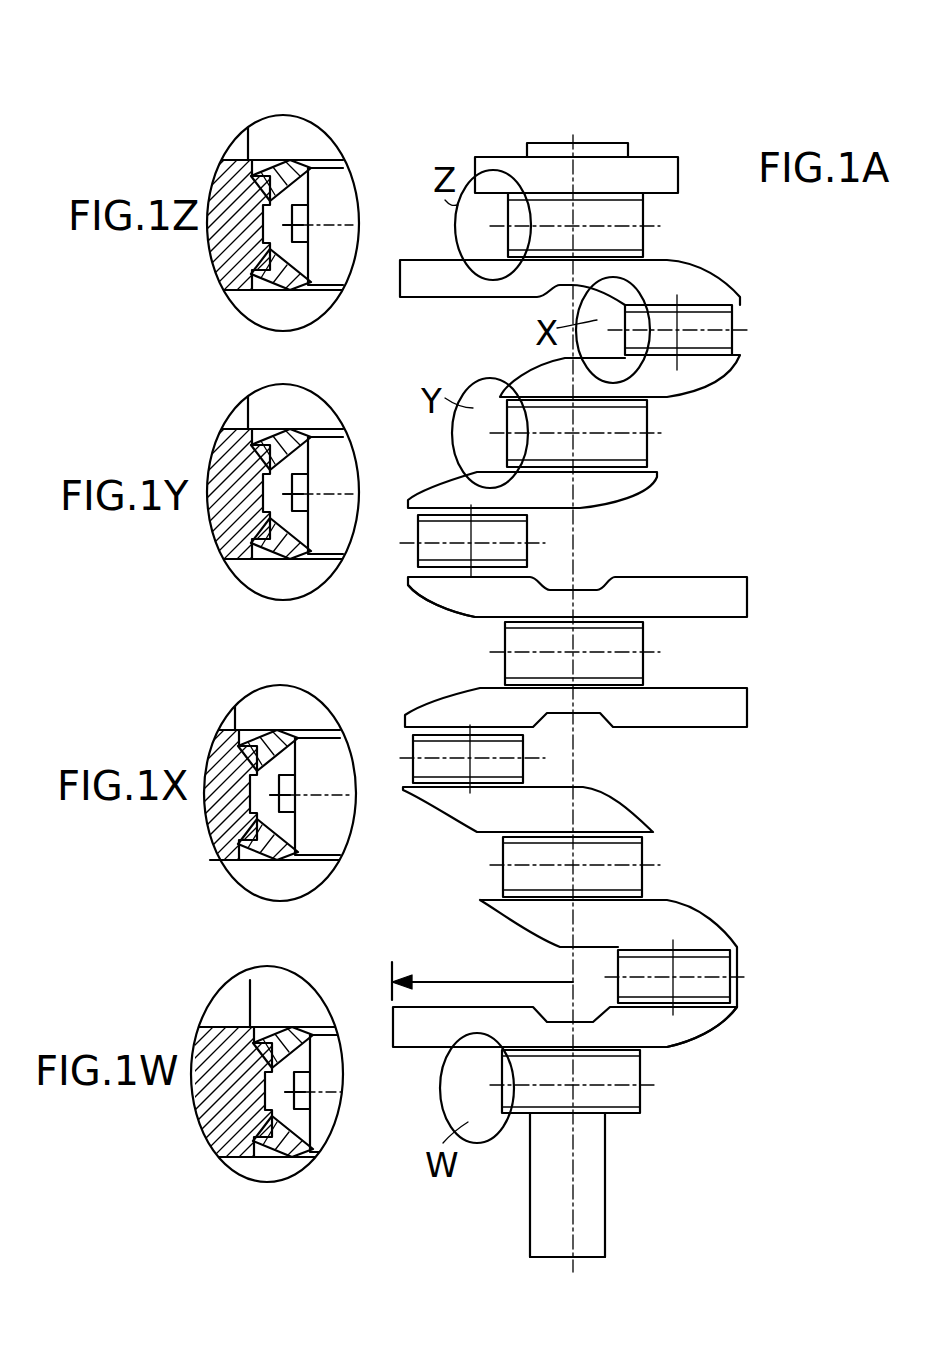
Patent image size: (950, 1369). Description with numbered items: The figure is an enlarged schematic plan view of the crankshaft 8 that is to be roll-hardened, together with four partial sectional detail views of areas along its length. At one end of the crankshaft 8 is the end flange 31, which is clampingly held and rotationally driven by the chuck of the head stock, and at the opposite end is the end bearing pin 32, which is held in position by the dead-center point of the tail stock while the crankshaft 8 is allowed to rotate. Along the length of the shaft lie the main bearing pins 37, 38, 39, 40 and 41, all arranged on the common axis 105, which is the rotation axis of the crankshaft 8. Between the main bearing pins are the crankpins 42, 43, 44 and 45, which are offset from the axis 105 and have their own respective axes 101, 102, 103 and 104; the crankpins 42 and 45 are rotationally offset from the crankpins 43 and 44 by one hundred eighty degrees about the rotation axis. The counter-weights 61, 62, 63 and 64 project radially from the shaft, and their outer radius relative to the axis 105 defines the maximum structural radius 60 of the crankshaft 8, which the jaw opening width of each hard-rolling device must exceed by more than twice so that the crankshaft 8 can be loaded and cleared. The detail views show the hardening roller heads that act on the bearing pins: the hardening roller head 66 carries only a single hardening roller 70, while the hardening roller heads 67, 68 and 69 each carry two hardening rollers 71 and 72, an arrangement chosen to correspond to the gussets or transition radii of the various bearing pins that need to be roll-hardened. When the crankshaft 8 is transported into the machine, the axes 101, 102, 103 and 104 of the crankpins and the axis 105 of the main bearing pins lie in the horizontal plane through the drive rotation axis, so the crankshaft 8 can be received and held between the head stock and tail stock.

In FIG. 1A, the crankshaft 8 is at (548, 143).
In FIG. 1A, the end flange 31 is at (640, 175).
In FIG. 1A, the end bearing pin 32 is at (590, 1250).
In FIG. 1A, the main bearing pin 37 is at (625, 1108).
In FIG. 1A, the main bearing pin 38 is at (625, 881).
In FIG. 1A, the main bearing pin 39 is at (630, 668).
In FIG. 1A, the main bearing pin 40 is at (640, 448).
In FIG. 1A, the main bearing pin 41 is at (630, 244).
In FIG. 1A, the crankpin 42 is at (720, 976).
In FIG. 1A, the crankpin 43 is at (510, 748).
In FIG. 1A, the crankpin 44 is at (520, 553).
In FIG. 1A, the crankpin 45 is at (735, 346).
In FIG. 1A, the maximum structural radius 60 is at (445, 982).
In FIG. 1A, the counter-weight 61 is at (543, 1004).
In FIG. 1A, the counter-weight 62 is at (737, 708).
In FIG. 1A, the counter-weight 63 is at (750, 600).
In FIG. 1A, the counter-weight 64 is at (420, 272).
In FIG. 1W, the hardening roller head 66 is at (276, 1202).
In FIG. 1X, the hardening roller head 67 is at (195, 886).
In FIG. 1Y, the hardening roller head 68 is at (218, 588).
In FIG. 1Z, the hardening roller head 69 is at (216, 319).
In FIG. 1W, the hardening roller 70 is at (330, 1071).
In FIG. 1Z, the hardening roller 71 is at (320, 298).
In FIG. 1Y, the hardening roller 71 is at (320, 568).
In FIG. 1X, the hardening roller 71 is at (324, 839).
In FIG. 1Z, the hardening roller 72 is at (321, 155).
In FIG. 1Y, the hardening roller 72 is at (332, 453).
In FIG. 1X, the hardening roller 72 is at (312, 727).
In FIG. 1A, the crankpin axis 101 is at (693, 1024).
In FIG. 1A, the crankpin axis 102 is at (470, 790).
In FIG. 1A, the crankpin axis 103 is at (473, 580).
In FIG. 1A, the crankpin axis 104 is at (680, 368).
In FIG. 1A, the rotation axis 105 is at (565, 1263).